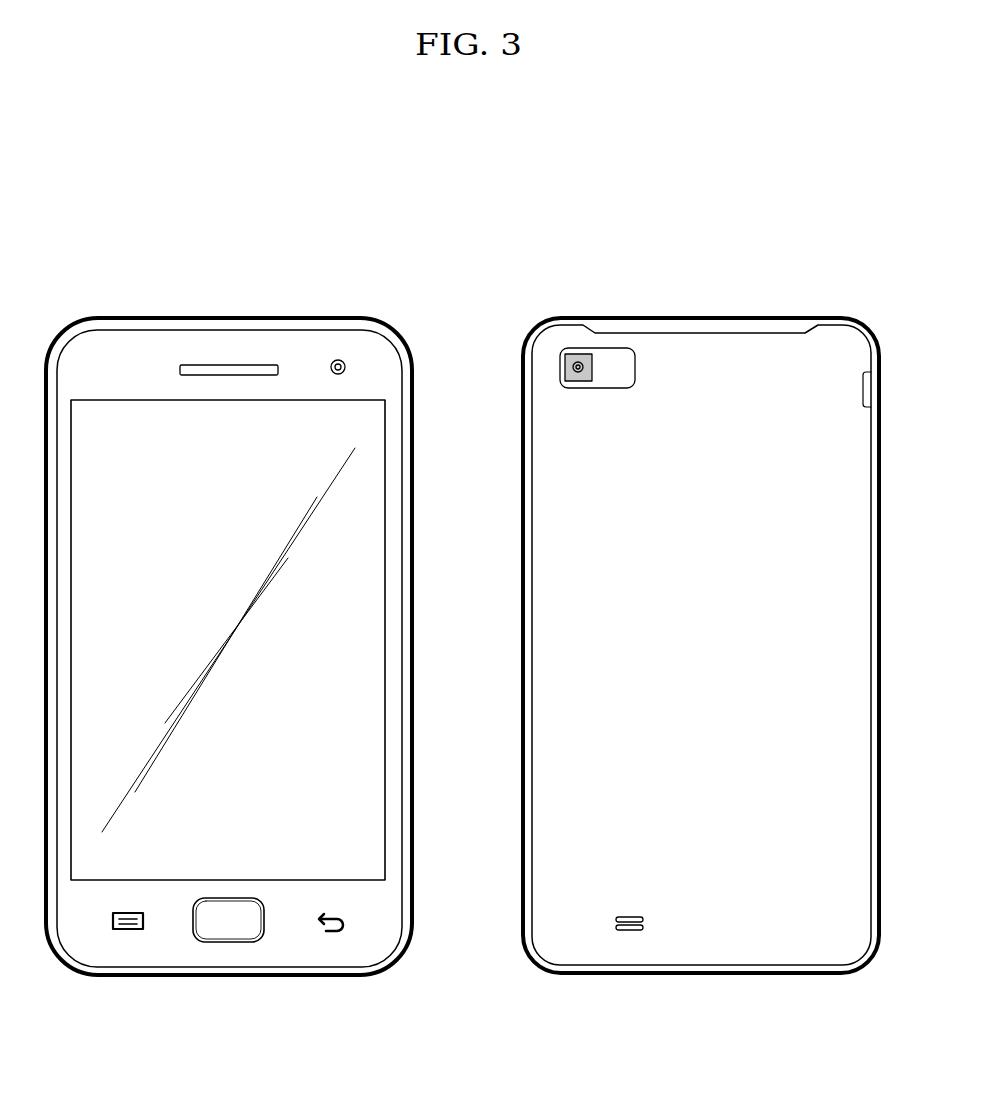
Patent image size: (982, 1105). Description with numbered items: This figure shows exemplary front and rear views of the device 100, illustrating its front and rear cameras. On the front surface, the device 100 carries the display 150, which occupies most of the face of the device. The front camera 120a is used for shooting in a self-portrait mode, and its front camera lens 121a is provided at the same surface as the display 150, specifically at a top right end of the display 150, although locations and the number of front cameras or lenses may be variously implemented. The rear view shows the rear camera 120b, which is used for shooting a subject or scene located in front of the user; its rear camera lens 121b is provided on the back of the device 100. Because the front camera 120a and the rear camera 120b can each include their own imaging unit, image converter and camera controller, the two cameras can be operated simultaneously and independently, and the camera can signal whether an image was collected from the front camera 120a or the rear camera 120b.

The device 100 is at (290, 318).
The display unit 150 is at (348, 668).
The front camera 120a is at (345, 365).
The front camera lens 121a is at (341, 361).
The rear camera 120b is at (560, 367).
The rear camera lens 121b is at (578, 361).